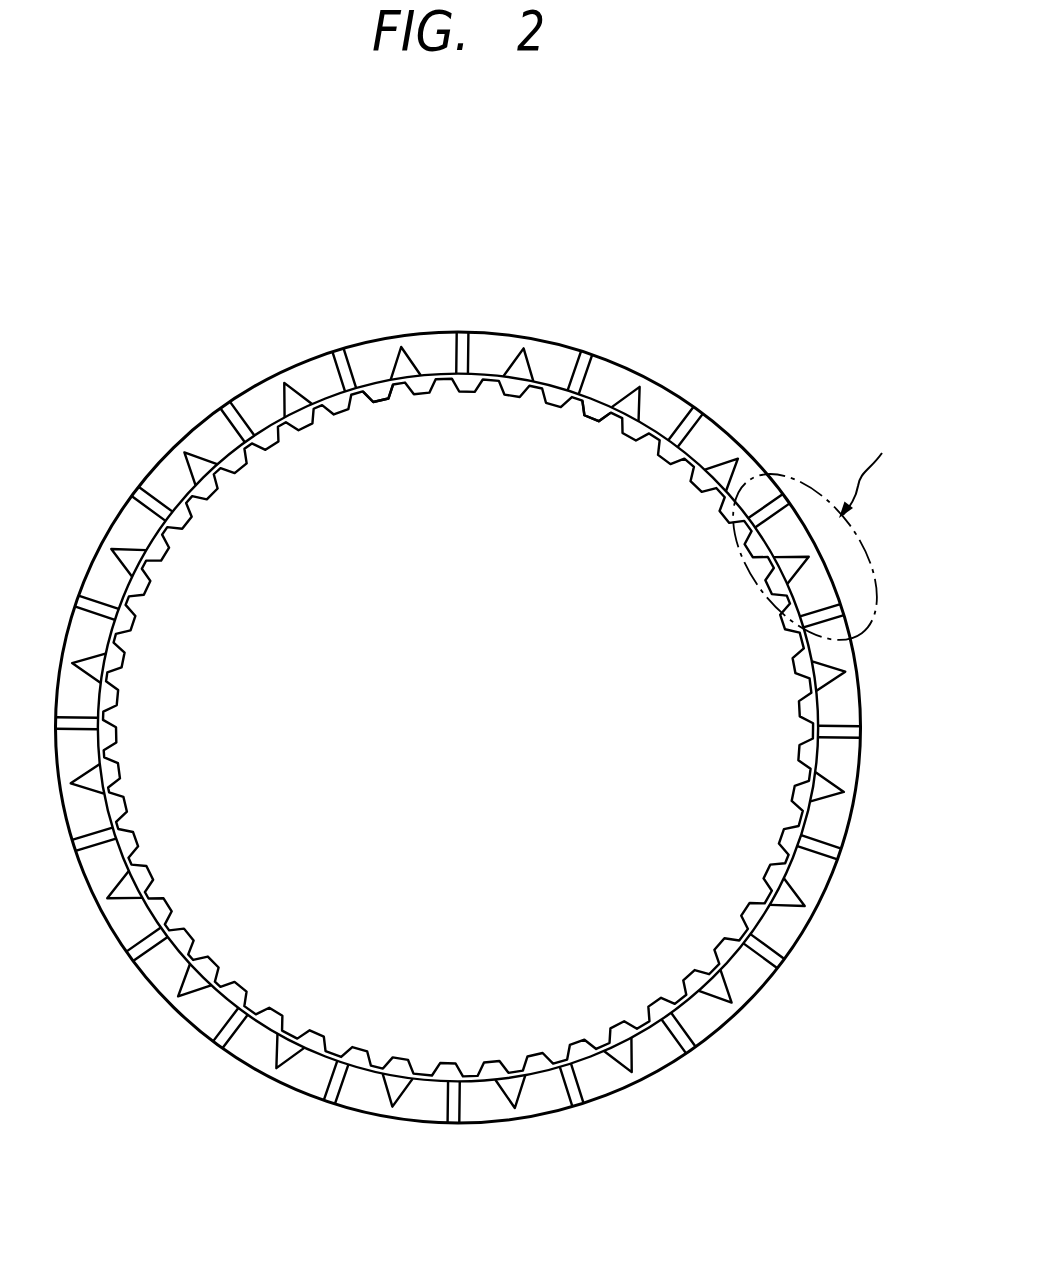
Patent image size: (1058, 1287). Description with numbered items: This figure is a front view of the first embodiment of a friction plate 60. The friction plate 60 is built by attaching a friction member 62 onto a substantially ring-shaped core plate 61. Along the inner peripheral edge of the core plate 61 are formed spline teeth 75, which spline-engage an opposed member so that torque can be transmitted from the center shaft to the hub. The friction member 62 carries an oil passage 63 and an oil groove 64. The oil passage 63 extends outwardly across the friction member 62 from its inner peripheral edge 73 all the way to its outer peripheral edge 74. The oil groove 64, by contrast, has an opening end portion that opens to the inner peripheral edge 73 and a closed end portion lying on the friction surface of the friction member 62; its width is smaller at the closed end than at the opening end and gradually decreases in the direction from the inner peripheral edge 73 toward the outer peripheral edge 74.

The friction plate 60 is at (748, 274).
The core plate 61 is at (458, 728).
The friction member 62 is at (458, 728).
The oil passage 63 is at (457, 727).
The oil groove 64 is at (458, 727).
The inner peripheral edge 73 is at (596, 411).
The outer peripheral edge 74 is at (457, 727).
The spline teeth 75 is at (378, 393).